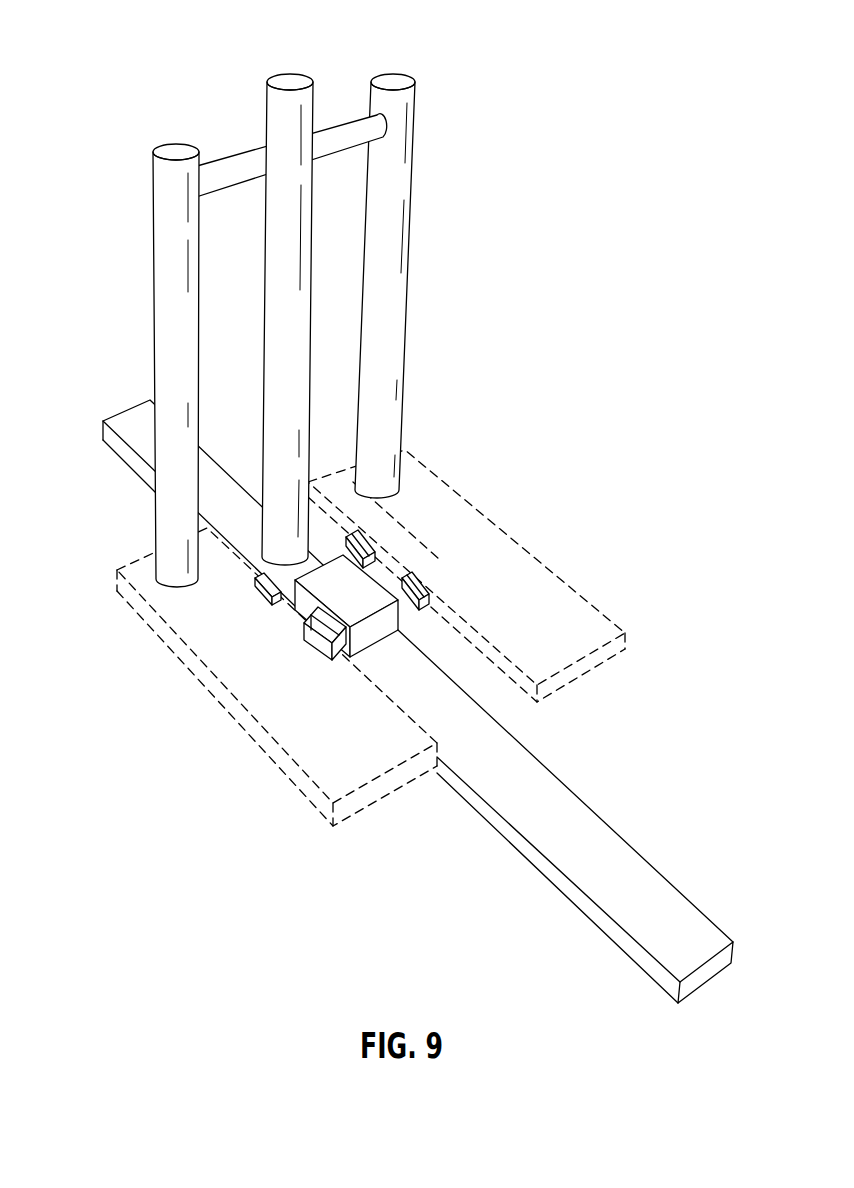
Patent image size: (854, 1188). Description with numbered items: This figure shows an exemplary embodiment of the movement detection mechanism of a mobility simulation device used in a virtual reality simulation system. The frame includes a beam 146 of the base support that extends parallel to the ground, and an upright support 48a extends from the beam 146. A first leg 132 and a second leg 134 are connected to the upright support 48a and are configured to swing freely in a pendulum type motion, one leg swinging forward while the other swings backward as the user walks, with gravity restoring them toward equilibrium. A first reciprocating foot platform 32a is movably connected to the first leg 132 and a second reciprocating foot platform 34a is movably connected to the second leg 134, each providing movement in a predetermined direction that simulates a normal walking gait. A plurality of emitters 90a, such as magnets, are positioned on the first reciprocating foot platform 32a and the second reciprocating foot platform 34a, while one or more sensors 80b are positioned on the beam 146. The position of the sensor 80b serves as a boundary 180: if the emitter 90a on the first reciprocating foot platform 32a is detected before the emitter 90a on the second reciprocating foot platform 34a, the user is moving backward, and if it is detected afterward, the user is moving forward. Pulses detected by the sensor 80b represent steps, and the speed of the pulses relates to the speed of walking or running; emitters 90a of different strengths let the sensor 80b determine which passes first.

The first reciprocating foot platform 32a is at (246, 677).
The second reciprocating foot platform 34a is at (501, 576).
The upright support 48a is at (298, 289).
The sensor 80b is at (444, 664).
The emitter 90a is at (332, 578).
The first leg 132 is at (136, 365).
The second leg 134 is at (422, 286).
The beam 146 is at (565, 816).
The boundary 180 is at (427, 606).